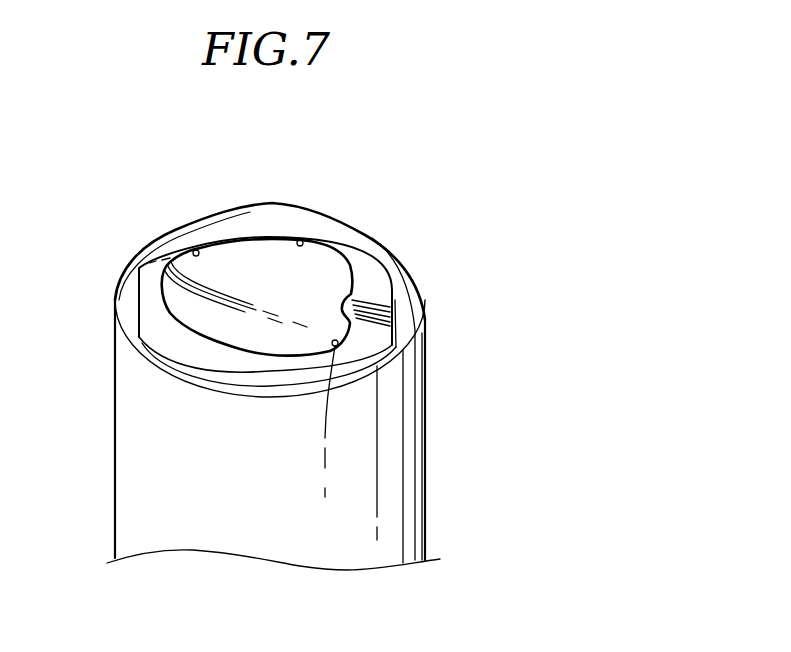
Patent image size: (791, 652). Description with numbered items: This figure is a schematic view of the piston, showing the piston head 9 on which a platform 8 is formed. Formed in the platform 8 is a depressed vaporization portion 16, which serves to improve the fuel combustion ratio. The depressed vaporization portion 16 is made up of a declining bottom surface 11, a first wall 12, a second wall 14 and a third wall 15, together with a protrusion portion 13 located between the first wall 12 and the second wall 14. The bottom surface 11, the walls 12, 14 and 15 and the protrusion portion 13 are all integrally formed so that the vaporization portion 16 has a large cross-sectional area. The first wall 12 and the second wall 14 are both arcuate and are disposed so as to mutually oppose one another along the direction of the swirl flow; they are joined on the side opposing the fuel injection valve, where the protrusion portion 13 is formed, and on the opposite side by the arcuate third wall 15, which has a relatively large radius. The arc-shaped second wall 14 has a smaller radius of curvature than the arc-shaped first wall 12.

The platform 8 is at (225, 304).
The piston head 9 is at (278, 386).
The declining bottom surface 11 is at (245, 232).
The first wall 12 is at (302, 240).
The protrusion portion 13 is at (350, 297).
The second wall 14 is at (333, 346).
The third wall 15 is at (193, 251).
The depressed vaporization portion 16 is at (219, 373).